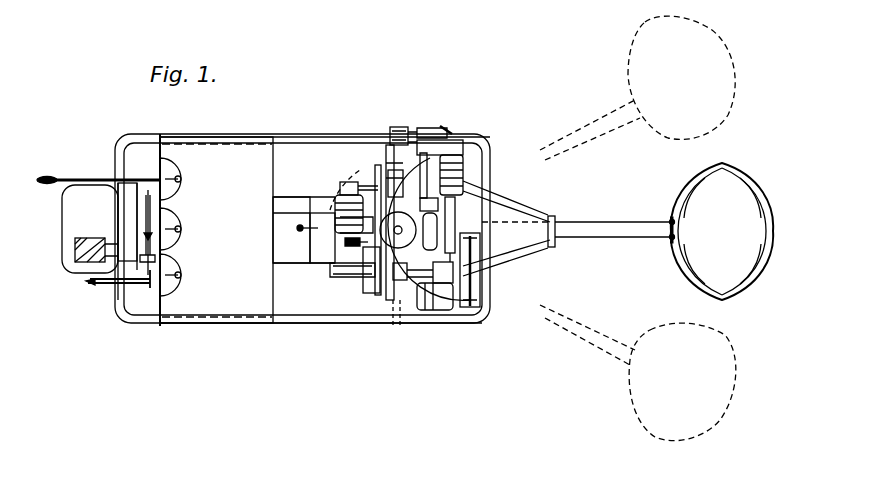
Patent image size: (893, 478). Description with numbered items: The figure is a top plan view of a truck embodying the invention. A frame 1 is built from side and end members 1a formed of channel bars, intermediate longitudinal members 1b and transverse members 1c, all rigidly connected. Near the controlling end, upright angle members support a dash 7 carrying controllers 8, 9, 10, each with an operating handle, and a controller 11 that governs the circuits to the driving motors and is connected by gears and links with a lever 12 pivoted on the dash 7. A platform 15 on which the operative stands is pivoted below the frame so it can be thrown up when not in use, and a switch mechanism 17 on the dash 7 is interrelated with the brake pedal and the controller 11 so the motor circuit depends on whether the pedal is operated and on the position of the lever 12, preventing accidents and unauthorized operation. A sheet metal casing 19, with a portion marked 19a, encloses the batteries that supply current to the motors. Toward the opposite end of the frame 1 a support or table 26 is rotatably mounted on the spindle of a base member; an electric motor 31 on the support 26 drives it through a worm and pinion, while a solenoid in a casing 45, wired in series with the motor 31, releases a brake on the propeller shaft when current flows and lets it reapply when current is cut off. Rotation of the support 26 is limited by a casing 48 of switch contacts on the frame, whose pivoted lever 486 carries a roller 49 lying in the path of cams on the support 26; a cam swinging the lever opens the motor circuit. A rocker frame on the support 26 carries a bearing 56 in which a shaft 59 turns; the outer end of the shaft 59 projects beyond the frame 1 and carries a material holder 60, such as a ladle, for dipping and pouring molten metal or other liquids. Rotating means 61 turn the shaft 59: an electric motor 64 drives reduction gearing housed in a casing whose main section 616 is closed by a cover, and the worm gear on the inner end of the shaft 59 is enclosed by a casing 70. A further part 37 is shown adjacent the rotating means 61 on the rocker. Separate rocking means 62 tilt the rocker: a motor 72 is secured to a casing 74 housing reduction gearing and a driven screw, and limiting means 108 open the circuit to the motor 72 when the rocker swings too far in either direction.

The frame 1 is at (327, 326).
The side and end members 1a is at (298, 137).
The intermediate longitudinal members 1b is at (297, 326).
The transverse members 1c is at (396, 326).
The dash 7 is at (165, 212).
The controller 8 is at (183, 181).
The controller 9 is at (183, 225).
The controller 10 is at (182, 271).
The controller 11 is at (120, 203).
The lever 12 is at (100, 288).
The platform 15 is at (64, 248).
The switch mechanism 17 is at (144, 217).
The sheet metal casing 19 is at (272, 177).
The cylinder 19a is at (336, 192).
The support 26 is at (352, 292).
The electric motor 31 is at (350, 237).
The rod 37 is at (456, 220).
The casing 45 is at (394, 186).
The casing 48 is at (291, 230).
The roller 49 is at (322, 234).
The lever 486 is at (298, 232).
The bearing 56 is at (545, 215).
The shaft 59 is at (596, 222).
The material holder 60 is at (695, 192).
The rotating means 61 is at (440, 140).
The rocking means 62 is at (443, 272).
The electric motor 64 is at (460, 170).
The casing 70 is at (429, 201).
The motor 72 is at (442, 312).
The casing 74 is at (466, 312).
The limiting means 108 is at (387, 270).
The main section of casing 616 is at (447, 142).